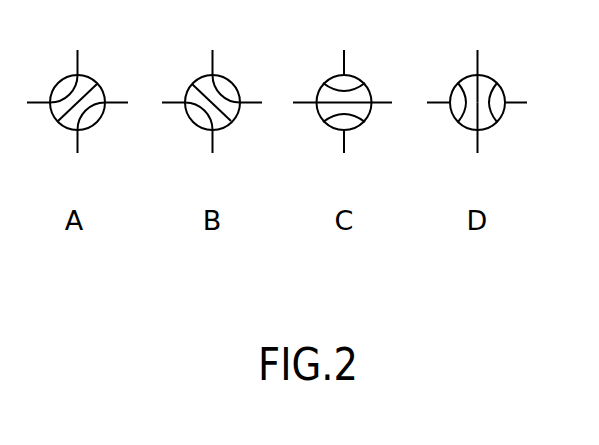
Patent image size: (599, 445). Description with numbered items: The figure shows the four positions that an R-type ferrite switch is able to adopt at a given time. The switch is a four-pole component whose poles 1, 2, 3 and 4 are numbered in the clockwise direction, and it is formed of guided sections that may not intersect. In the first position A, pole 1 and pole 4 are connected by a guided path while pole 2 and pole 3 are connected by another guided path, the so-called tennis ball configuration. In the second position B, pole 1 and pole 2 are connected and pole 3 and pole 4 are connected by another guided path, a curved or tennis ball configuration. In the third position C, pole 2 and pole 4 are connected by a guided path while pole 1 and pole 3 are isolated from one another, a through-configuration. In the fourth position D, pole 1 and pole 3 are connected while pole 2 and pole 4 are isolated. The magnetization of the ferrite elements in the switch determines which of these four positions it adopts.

The pole 1 is at (275, 57).
The pole 2 is at (323, 117).
The pole 3 is at (278, 146).
The pole 4 is at (228, 95).